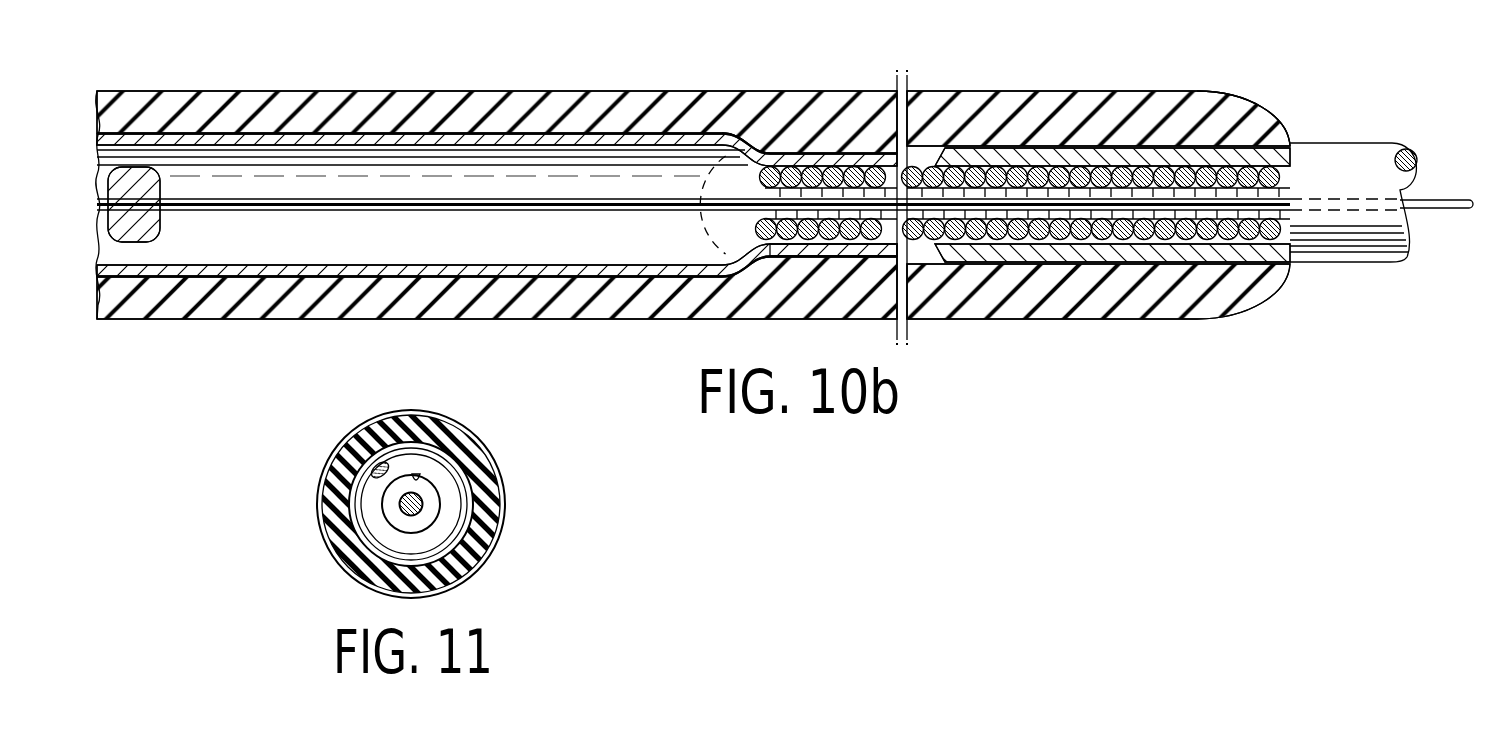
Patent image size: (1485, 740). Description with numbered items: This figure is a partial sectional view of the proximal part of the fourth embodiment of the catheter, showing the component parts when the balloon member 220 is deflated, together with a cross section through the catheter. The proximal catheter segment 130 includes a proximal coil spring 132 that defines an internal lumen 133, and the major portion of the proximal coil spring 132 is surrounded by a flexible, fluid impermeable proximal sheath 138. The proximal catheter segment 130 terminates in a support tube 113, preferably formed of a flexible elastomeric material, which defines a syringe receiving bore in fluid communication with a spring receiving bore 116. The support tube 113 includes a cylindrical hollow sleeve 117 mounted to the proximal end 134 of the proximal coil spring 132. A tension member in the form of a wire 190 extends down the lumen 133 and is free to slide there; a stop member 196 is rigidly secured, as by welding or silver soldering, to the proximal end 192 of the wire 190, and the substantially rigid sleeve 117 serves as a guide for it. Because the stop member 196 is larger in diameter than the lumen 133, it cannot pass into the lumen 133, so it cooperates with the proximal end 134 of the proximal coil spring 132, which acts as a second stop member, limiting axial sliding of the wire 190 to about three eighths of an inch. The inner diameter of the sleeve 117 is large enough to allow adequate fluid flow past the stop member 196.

In FIG. 10B, the support tube 113 is at (485, 91).
In FIG. 10B, the cylindrical hollow sleeve 117 is at (288, 142).
In FIG. 10B, the proximal end 134 is at (731, 140).
In FIG. 10B, the spring receiving bore 116 is at (933, 155).
In FIG. 10B, the proximal sheath 138 is at (1220, 153).
In FIG. 10B, the internal lumen 133 is at (760, 218).
In FIG. 11, the internal lumen 133 is at (427, 476).
In FIG. 10B, the proximal coil spring 132 is at (1140, 248).
In FIG. 11, the proximal coil spring 132 is at (448, 486).
In FIG. 10B, the stop member 196 is at (142, 172).
In FIG. 10B, the wire 190 is at (582, 211).
In FIG. 11, the wire 190 is at (400, 507).
In FIG. 10B, the proximal end 192 is at (119, 167).
In FIG. 10B, the proximal catheter segment 130 is at (1348, 136).
In FIG. 11, the balloon member 220 is at (482, 510).